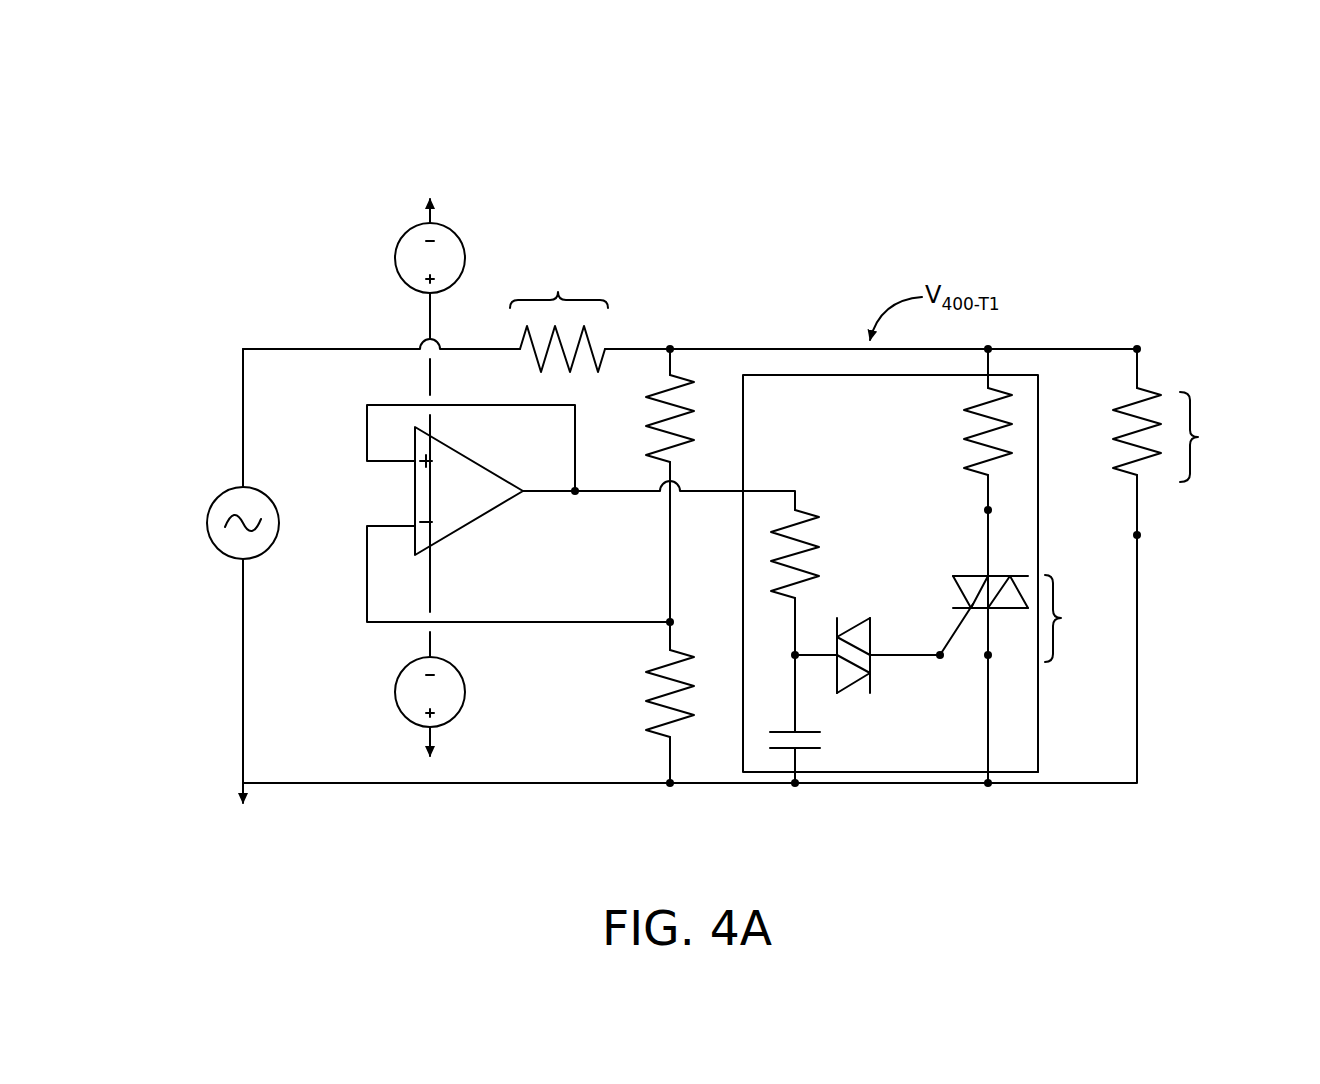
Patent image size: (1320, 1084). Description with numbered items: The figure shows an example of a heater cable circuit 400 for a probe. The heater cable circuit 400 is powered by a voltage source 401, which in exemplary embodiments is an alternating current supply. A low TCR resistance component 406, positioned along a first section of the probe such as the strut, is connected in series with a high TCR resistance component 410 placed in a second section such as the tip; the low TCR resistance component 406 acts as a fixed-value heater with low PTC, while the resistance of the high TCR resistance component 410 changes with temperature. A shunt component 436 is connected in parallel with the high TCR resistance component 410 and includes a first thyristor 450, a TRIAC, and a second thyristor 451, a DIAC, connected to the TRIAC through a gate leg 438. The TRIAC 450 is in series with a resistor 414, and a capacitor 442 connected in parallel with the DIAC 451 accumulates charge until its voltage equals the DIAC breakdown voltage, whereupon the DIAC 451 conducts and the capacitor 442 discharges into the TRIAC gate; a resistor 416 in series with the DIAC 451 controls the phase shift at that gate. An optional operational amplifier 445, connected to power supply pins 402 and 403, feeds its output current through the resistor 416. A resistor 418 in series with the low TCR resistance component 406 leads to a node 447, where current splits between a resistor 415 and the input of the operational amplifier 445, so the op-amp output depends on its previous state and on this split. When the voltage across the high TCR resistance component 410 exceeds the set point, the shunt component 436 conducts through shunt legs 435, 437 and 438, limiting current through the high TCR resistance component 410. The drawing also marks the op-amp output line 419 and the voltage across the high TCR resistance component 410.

The heater cable circuit 400 is at (414, 140).
The voltage source 401 is at (207, 523).
The power supply pin 402 is at (395, 258).
The power supply pin 403 is at (395, 692).
The low TCR resistance component 406 is at (590, 348).
The high TCR resistance component 410 is at (1113, 437).
The resistor 414 is at (965, 437).
The resistor 415 is at (650, 728).
The resistor 416 is at (815, 520).
The resistor 418 is at (650, 448).
The op amp output signal line 419 is at (714, 478).
The shunt leg 435 is at (996, 755).
The shunt component 436 is at (1040, 748).
The shunt leg 437 is at (782, 706).
The gate leg 438 is at (912, 640).
The capacitor 442 is at (810, 740).
The operational amplifier 445 is at (517, 477).
The node 447 is at (640, 604).
The first thyristor 450 is at (955, 580).
The second thyristor 451 is at (848, 692).